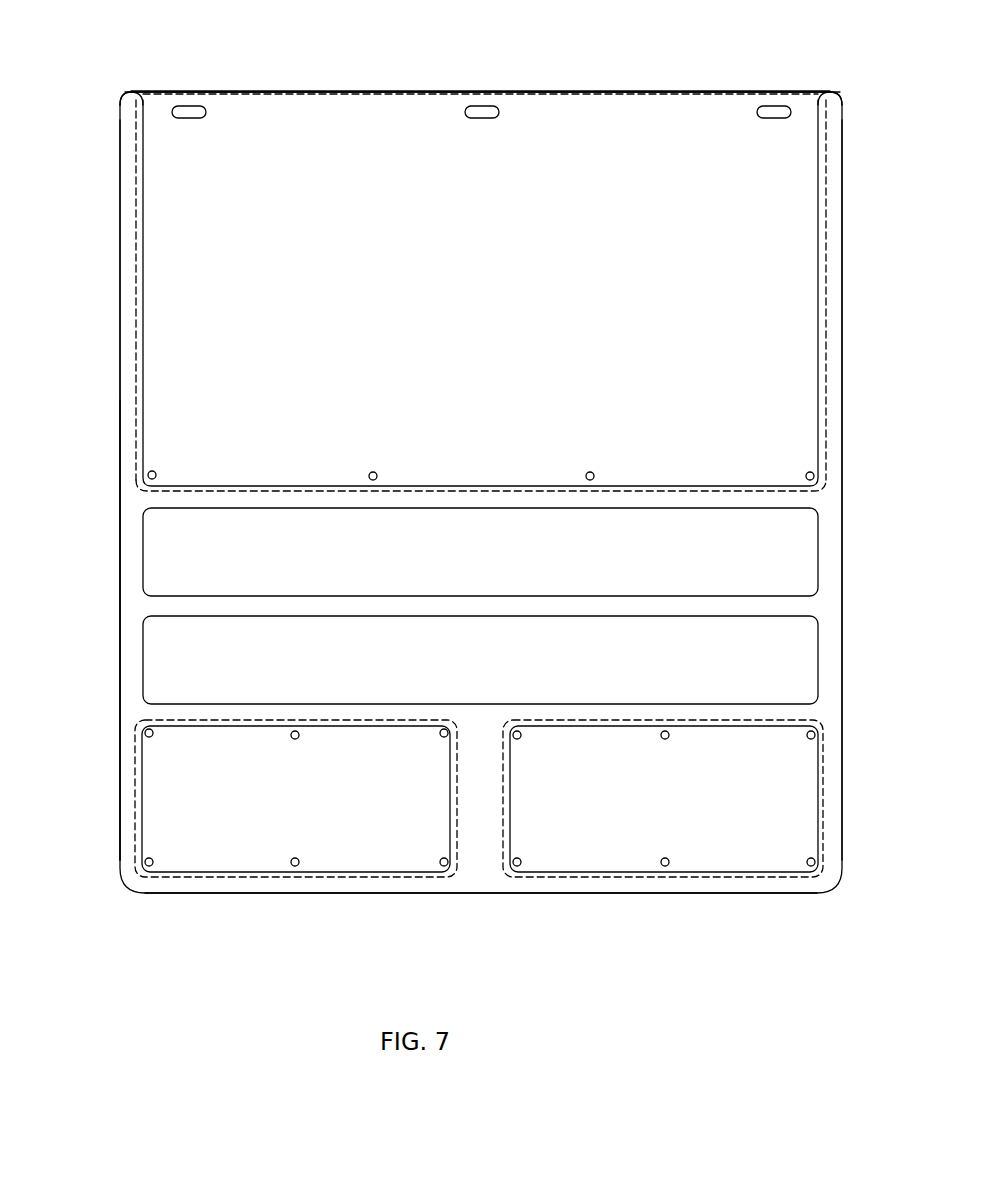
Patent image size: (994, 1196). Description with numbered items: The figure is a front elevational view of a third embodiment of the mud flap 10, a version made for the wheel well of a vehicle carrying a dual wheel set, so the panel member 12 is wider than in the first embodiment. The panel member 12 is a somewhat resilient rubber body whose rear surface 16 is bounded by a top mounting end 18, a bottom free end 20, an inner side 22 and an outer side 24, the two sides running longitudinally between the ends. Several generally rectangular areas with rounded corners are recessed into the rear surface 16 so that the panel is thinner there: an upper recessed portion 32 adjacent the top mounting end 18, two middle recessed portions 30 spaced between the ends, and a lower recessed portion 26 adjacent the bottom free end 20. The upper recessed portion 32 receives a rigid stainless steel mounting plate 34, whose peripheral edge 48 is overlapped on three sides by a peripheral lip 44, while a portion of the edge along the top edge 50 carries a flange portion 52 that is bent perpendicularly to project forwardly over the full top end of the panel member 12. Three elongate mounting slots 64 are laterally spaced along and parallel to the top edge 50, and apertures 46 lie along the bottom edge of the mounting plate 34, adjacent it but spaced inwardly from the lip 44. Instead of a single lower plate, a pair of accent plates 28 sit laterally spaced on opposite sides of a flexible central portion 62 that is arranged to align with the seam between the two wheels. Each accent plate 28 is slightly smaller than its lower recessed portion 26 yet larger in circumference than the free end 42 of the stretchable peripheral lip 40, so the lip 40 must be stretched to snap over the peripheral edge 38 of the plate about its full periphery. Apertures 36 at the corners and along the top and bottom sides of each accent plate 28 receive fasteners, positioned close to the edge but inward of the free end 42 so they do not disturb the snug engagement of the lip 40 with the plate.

The mud flap 10 is at (50, 270).
The panel member 12 is at (132, 611).
The rear surface 16 is at (824, 612).
The top mounting end 18 is at (127, 92).
The bottom free end 20 is at (220, 894).
The inner side 22 is at (842, 708).
The outer side 24 is at (120, 700).
The lower recessed portion 26 is at (172, 796).
The accent plate 28 is at (396, 856).
The middle recessed portion 30 is at (800, 554).
The upper recessed portion 32 is at (800, 278).
The mounting plate 34 is at (798, 318).
The apertures 36 is at (295, 740).
The peripheral edge 38 is at (342, 722).
The peripheral lip 40 is at (378, 722).
The free end 42 is at (225, 872).
The peripheral lip 44 is at (138, 354).
The apertures 46 is at (378, 477).
The peripheral edge 48 is at (275, 490).
The top edge 50 is at (403, 97).
The flange portion 52 is at (491, 93).
The flexible central portion 62 is at (478, 757).
The mounting slots 64 is at (190, 118).